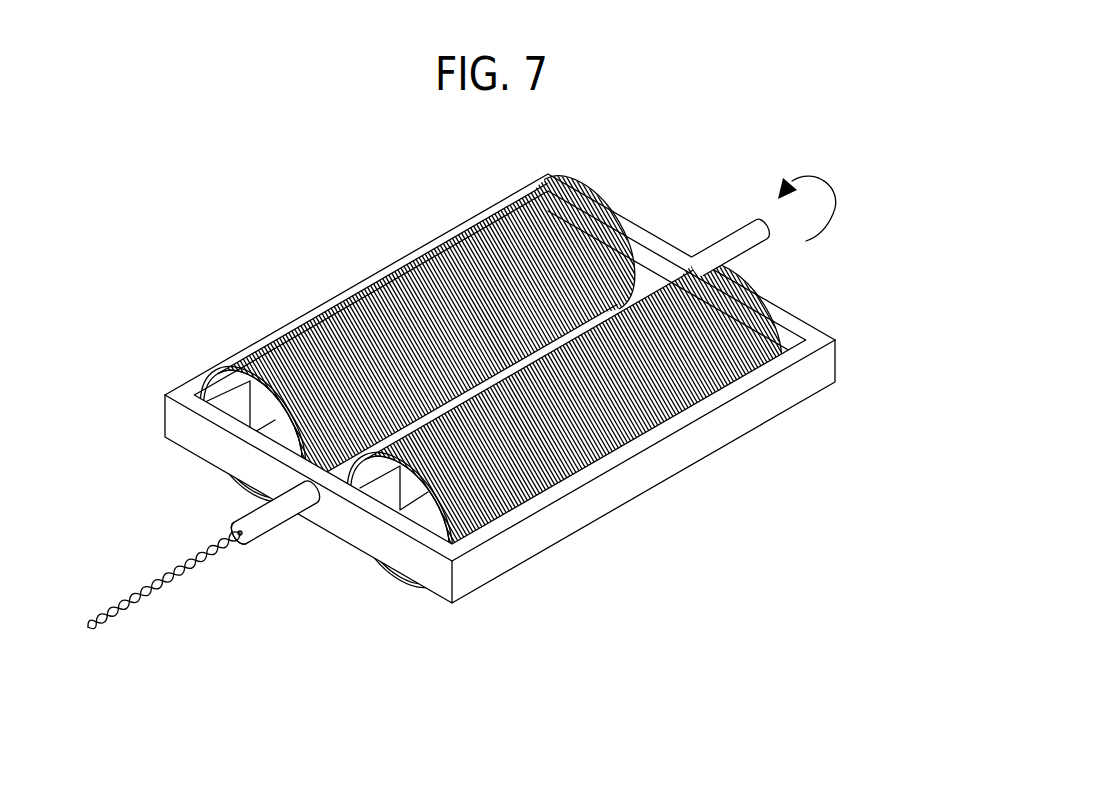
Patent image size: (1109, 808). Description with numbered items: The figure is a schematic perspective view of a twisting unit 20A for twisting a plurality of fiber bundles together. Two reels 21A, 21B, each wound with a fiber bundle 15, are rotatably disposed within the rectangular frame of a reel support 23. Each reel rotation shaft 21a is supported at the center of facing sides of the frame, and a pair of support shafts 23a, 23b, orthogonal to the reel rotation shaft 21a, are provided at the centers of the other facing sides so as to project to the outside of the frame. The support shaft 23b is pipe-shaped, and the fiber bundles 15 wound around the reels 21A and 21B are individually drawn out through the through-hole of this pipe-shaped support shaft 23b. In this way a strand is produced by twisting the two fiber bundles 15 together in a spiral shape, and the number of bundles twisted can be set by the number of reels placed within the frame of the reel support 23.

The twisting unit 20A is at (212, 303).
The reel 21A is at (586, 184).
The reel 21B is at (776, 302).
The reel rotation shaft 21a is at (266, 430).
The reel support 23 is at (612, 495).
The support shaft 23a is at (727, 235).
The support shaft 23b is at (275, 531).
The fiber bundle 15 is at (387, 292).